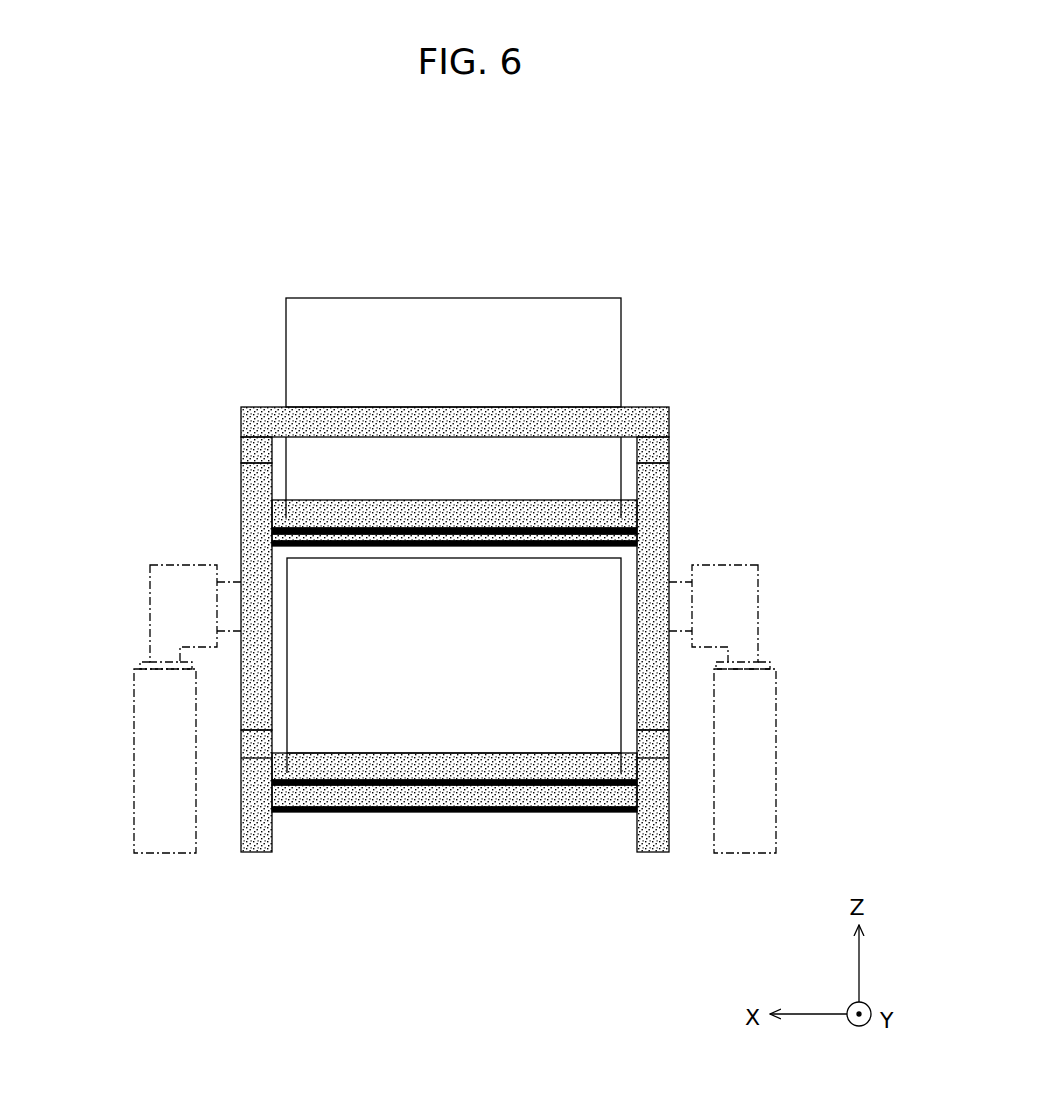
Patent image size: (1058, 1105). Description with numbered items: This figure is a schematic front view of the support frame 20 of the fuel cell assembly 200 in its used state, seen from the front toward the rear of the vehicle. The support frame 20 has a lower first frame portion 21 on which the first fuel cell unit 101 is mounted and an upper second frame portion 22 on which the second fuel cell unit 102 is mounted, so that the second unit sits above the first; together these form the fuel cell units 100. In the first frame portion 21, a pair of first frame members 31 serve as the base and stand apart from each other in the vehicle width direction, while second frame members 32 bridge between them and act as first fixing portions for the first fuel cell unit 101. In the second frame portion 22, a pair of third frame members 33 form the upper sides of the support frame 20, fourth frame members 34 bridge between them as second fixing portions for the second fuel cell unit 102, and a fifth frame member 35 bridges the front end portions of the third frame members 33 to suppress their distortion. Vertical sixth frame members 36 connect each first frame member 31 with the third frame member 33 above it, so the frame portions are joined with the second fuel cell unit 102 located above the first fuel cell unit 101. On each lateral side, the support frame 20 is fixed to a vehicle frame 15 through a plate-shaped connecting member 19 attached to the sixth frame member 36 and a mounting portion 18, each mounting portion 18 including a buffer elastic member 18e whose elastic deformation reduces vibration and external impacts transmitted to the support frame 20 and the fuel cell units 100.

The fuel cell assembly 200 is at (454, 541).
The support frame 20 is at (454, 618).
The second frame portion 22 is at (507, 595).
The first frame portion 21 is at (529, 828).
The fifth frame member 35 is at (567, 420).
The third frame member 33 is at (255, 445).
The fourth frame member 34 is at (315, 510).
The sixth frame member 36 is at (247, 665).
The first frame member 31 is at (260, 845).
The second frame member 32 is at (462, 770).
The connecting member 19 is at (235, 575).
The mounting portion 18 is at (455, 591).
The buffer elastic member 18e is at (200, 605).
The vehicle frame 15 is at (148, 742).
The fuel cell unit 100 is at (543, 610).
The first fuel cell unit 101 is at (570, 735).
The second fuel cell unit 102 is at (600, 340).